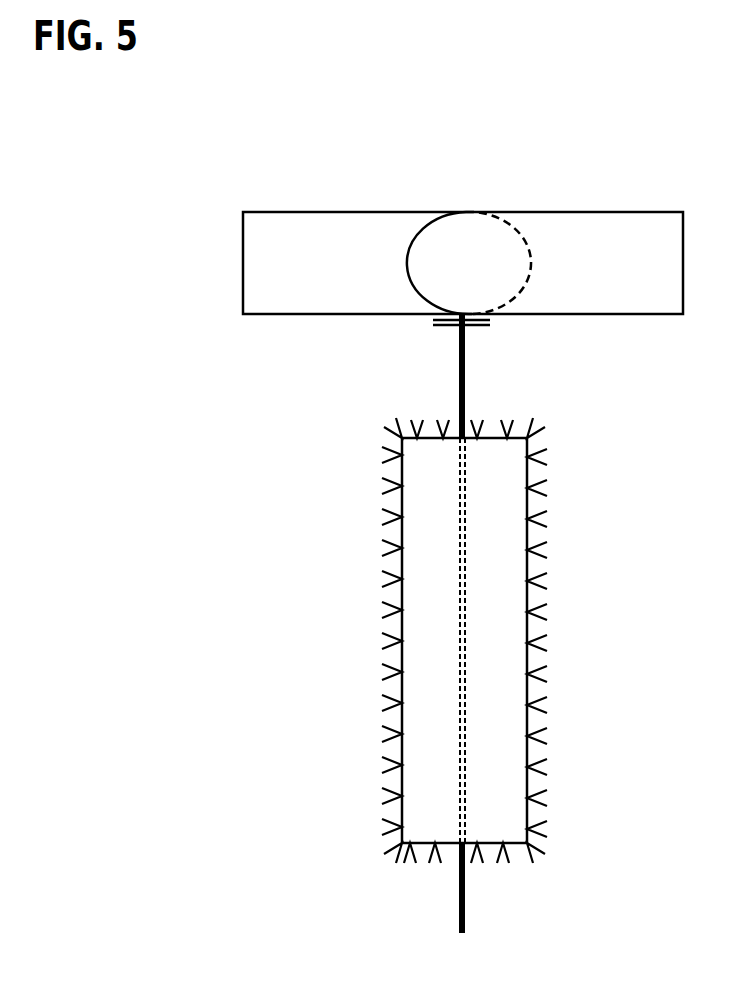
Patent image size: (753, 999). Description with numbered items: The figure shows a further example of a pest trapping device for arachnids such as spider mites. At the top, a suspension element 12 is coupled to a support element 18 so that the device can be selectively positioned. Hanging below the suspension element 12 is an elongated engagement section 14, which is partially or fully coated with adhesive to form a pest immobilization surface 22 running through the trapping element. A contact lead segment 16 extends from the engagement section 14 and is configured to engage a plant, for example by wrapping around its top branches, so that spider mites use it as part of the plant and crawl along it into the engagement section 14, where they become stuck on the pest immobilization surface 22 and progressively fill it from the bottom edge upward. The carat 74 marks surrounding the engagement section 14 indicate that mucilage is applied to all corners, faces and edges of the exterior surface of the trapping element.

The support element 18 is at (303, 212).
The suspension element 12 is at (412, 322).
The contact lead segment 16 is at (460, 888).
The engagement section 14 is at (528, 569).
The pest immobilization surface 22 is at (501, 668).
The carat 74 is at (560, 776).